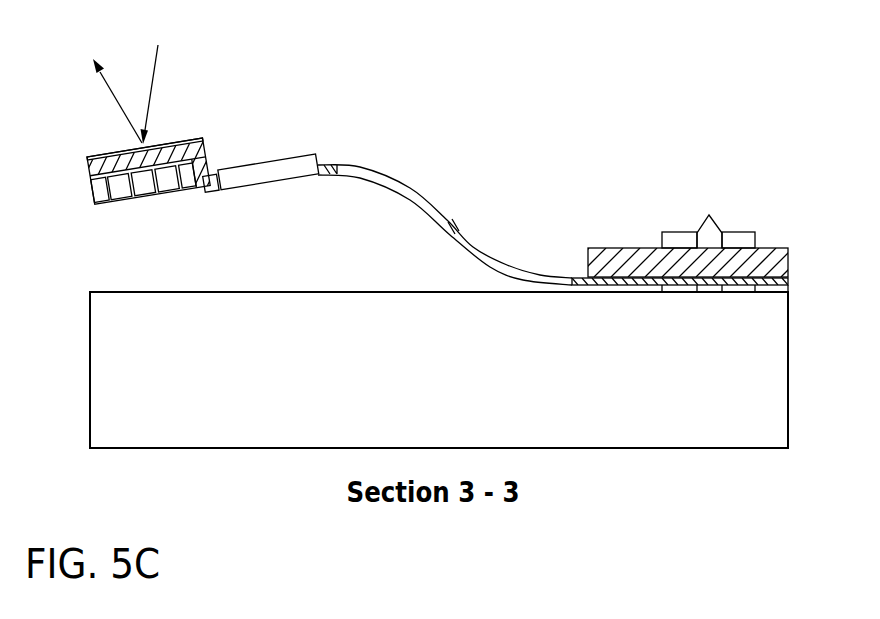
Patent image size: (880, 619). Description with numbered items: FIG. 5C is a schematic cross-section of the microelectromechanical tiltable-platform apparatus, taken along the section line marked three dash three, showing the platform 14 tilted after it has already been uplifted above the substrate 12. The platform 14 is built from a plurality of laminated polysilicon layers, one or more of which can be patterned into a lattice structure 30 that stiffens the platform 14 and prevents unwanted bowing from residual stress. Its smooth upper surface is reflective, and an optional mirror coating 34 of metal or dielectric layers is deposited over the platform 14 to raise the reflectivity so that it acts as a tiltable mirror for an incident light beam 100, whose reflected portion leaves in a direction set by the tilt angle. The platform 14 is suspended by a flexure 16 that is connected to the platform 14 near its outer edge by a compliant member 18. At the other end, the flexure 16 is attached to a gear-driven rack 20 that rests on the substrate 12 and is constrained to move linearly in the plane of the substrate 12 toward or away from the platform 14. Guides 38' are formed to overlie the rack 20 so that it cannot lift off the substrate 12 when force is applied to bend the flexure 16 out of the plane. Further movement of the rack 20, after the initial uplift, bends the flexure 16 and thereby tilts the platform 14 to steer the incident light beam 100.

The substrate 12 is at (124, 408).
The platform 14 is at (92, 167).
The flexure 16 is at (412, 190).
The compliant member 18 is at (260, 165).
The gear-driven rack 20 is at (790, 262).
The lattice structure 30 is at (107, 193).
The mirror coating 34 is at (100, 153).
The guides 38' is at (708, 242).
The incident light beam 100 is at (152, 83).